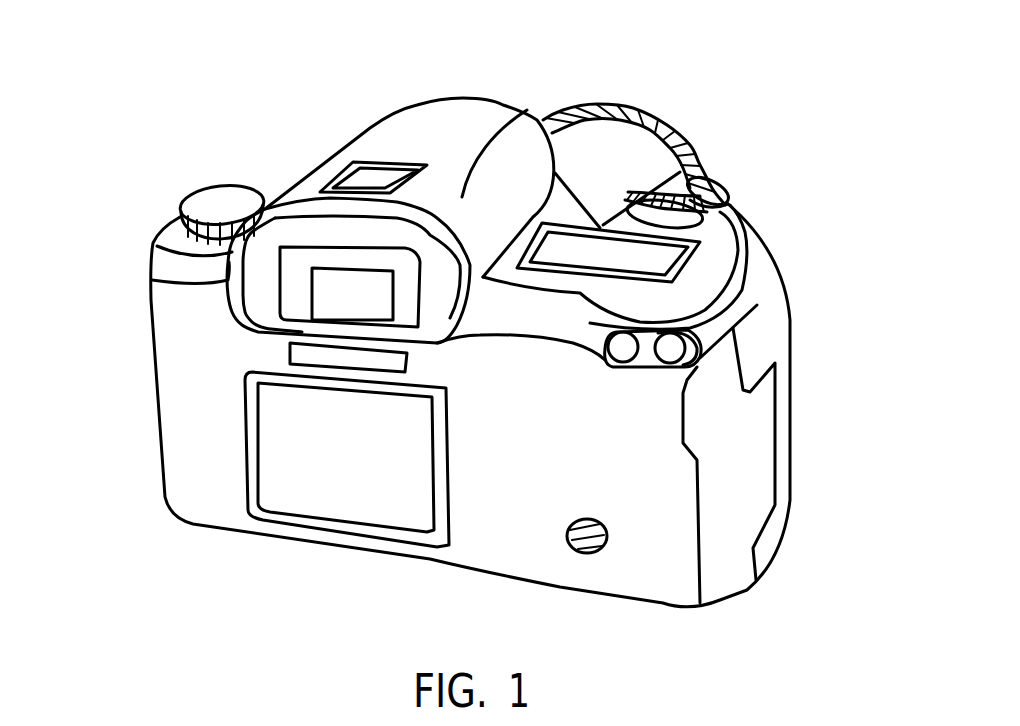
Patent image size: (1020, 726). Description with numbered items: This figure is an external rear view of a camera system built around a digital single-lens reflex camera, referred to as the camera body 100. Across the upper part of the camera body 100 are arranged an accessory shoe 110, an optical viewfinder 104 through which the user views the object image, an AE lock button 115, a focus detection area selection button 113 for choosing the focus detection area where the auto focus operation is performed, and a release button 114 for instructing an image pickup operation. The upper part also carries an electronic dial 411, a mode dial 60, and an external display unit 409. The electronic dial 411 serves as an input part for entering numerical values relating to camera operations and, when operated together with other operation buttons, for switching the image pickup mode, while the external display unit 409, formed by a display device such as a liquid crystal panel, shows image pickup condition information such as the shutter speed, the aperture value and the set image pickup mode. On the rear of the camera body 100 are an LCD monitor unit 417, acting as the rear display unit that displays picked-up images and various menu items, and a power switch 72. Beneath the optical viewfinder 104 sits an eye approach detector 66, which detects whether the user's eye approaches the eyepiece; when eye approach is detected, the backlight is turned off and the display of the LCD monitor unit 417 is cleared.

The camera body 100 is at (158, 262).
The mode dial 60 is at (220, 203).
The optical viewfinder 104 is at (353, 290).
The accessory shoe 110 is at (373, 178).
The external display unit 409 is at (600, 240).
The electronic dial 411 is at (672, 188).
The release button 114 is at (717, 192).
The eye approach detector 66 is at (290, 344).
The LCD monitor unit 417 is at (353, 500).
The focus detection area selection button 113 is at (673, 347).
The AE lock button 115 is at (630, 367).
The power switch 72 is at (600, 553).